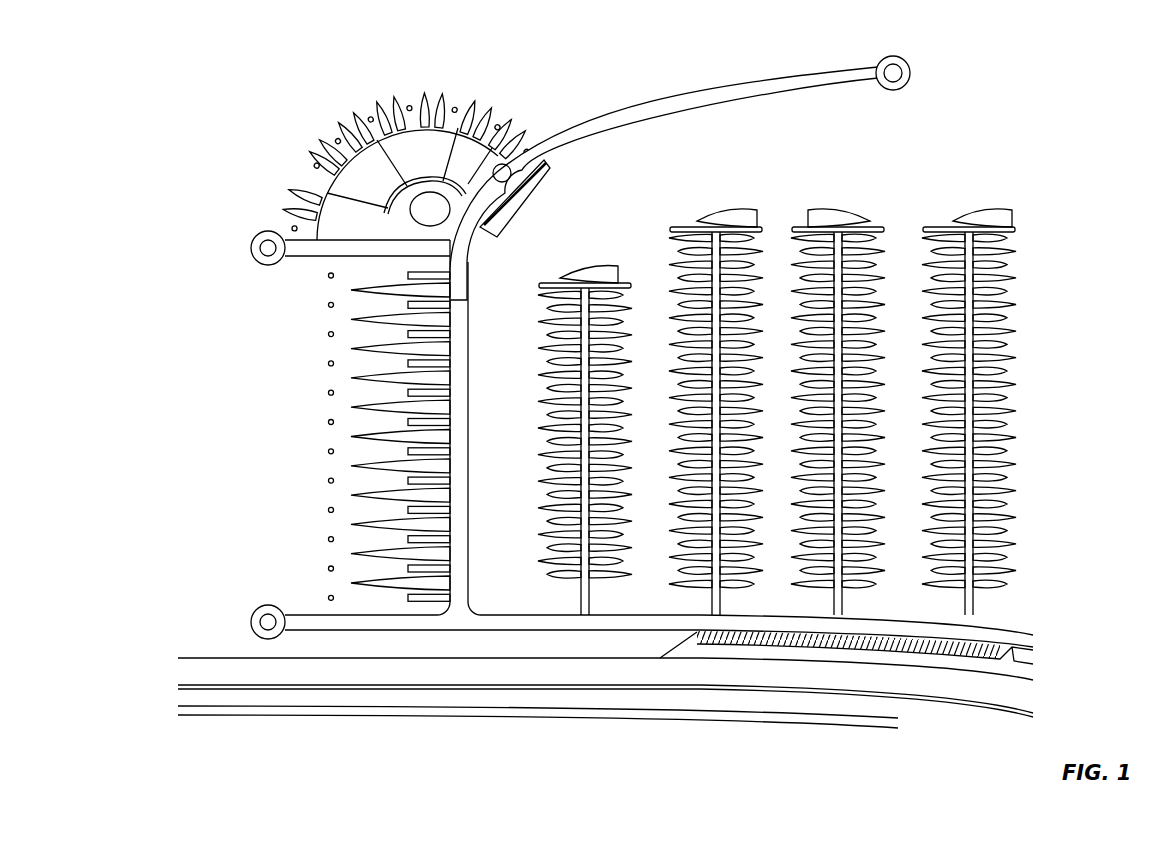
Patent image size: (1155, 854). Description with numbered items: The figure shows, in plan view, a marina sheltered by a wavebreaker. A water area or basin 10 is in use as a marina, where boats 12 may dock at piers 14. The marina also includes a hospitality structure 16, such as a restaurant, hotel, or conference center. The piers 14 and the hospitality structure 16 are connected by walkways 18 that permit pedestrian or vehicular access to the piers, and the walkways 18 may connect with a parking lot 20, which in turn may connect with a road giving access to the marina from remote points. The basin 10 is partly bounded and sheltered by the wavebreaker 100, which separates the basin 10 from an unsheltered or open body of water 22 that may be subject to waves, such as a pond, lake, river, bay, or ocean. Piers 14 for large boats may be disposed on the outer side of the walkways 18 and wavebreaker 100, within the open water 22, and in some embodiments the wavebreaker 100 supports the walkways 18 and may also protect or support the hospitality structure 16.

The basin 10 is at (712, 163).
The boats 12 is at (341, 354).
The piers 14 is at (620, 291).
The hospitality structure 16 is at (374, 190).
The walkways 18 is at (468, 628).
The parking lot 20 is at (759, 687).
The open water 22 is at (312, 70).
The wavebreaker 100 is at (631, 104).